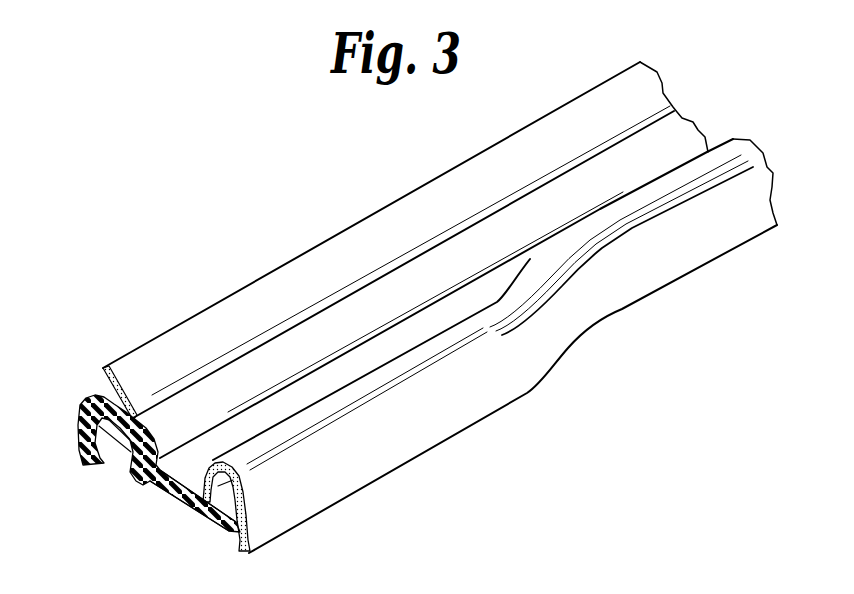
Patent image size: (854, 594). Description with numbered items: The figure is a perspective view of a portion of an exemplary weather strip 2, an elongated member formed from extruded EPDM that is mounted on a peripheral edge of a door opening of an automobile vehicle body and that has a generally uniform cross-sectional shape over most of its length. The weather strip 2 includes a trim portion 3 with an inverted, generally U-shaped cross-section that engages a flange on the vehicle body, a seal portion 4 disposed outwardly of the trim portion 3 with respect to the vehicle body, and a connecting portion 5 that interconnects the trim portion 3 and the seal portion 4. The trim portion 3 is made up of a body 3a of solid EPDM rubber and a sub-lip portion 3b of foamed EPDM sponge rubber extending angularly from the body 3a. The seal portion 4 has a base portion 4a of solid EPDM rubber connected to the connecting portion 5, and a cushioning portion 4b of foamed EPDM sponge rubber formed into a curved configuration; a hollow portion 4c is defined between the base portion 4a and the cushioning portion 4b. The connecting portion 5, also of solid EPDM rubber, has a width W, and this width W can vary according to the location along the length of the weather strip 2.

The weather strip 2 is at (219, 283).
The trim portion 3 is at (81, 433).
The body 3a is at (82, 452).
The sub-lip portion 3b is at (104, 373).
The seal portion 4 is at (254, 523).
The base portion 4a is at (211, 519).
The cushioning portion 4b is at (247, 496).
The hollow portion 4c is at (242, 477).
The connecting portion 5 is at (197, 498).
The width W is at (196, 507).